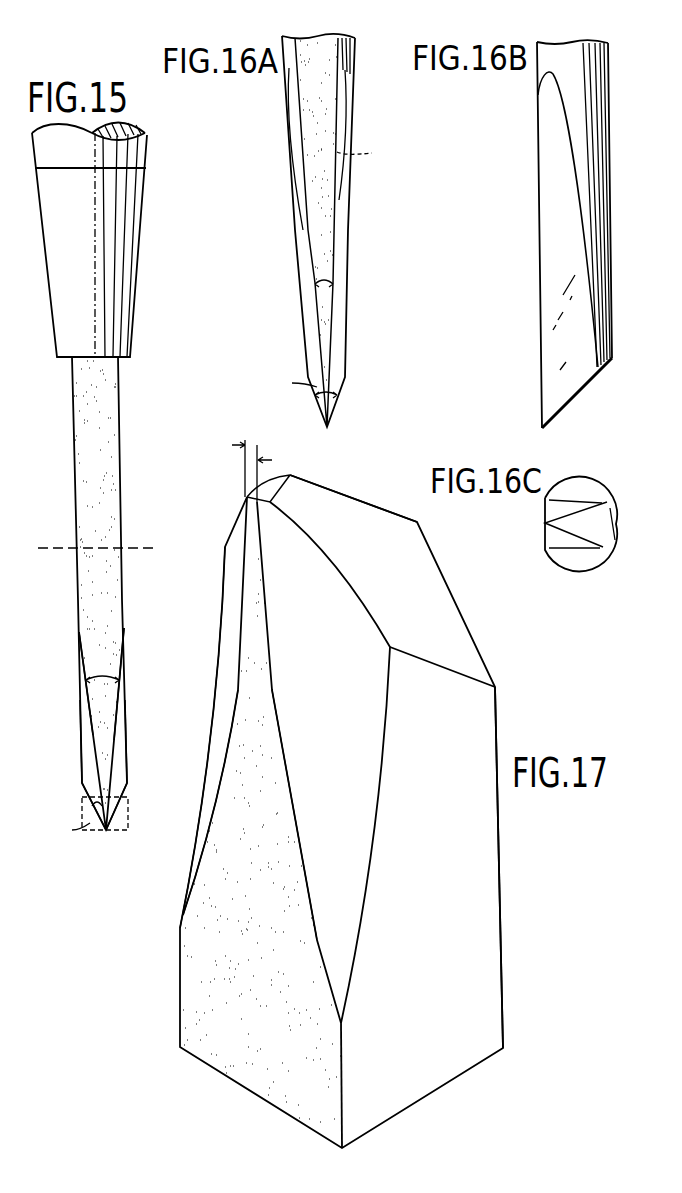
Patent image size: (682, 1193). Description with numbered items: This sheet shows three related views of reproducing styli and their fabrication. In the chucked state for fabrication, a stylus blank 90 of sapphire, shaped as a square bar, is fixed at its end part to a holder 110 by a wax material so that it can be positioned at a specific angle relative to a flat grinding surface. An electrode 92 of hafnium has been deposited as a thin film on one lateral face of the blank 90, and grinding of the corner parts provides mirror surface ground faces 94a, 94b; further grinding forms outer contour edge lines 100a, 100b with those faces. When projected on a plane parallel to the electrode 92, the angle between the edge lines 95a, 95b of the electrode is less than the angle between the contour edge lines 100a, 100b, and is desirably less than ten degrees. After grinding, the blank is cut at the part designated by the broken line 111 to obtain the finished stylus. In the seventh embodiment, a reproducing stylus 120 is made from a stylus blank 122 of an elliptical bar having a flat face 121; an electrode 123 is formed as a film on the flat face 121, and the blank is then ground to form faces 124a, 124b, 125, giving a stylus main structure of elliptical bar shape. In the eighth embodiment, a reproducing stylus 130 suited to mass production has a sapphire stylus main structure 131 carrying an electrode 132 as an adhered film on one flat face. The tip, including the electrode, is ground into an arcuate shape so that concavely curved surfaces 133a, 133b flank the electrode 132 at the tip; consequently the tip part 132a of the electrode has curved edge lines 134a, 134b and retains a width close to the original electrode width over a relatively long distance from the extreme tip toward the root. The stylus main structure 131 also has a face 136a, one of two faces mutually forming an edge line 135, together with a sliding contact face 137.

In FIG. 15, the holder 110 is at (143, 193).
In FIG. 15, the stylus blank 90 is at (122, 397).
In FIG. 15, the broken line 111 is at (100, 545).
In FIG. 15, the electrode 92 is at (110, 581).
In FIG. 15, the edge line of electrode 95a is at (88, 707).
In FIG. 15, the edge line of electrode 95b is at (117, 713).
In FIG. 15, the mirror surface ground face 94a is at (82, 748).
In FIG. 15, the mirror surface ground face 94b is at (123, 747).
In FIG. 15, the external contour edge line 100a is at (82, 802).
In FIG. 15, the external contour edge line 100b is at (125, 800).
In FIG. 16A, the reproducing stylus 120 is at (383, 39).
In FIG. 16B, the reproducing stylus 120 is at (645, 36).
In FIG. 16C, the reproducing stylus 120 is at (631, 483).
In FIG. 16A, the stylus blank 122 is at (353, 92).
In FIG. 16B, the stylus blank 122 is at (607, 125).
In FIG. 16A, the flat face 121 is at (363, 139).
In FIG. 16A, the electrode 123 is at (320, 247).
In FIG. 16B, the electrode 123 is at (537, 193).
In FIG. 16C, the electrode 123 is at (543, 537).
In FIG. 16A, the ground face 124a is at (293, 225).
In FIG. 16C, the ground face 124a is at (572, 557).
In FIG. 16A, the ground face 124b is at (345, 213).
In FIG. 16B, the ground face 124b is at (550, 260).
In FIG. 16C, the ground face 124b is at (568, 495).
In FIG. 16B, the ground face 125 is at (577, 393).
In FIG. 16C, the ground face 125 is at (603, 525).
In FIG. 17, the reproducing stylus 130 is at (388, 493).
In FIG. 17, the edge line 135 is at (337, 477).
In FIG. 17, the sliding contact face 137 is at (265, 488).
In FIG. 17, the tip part of electrode 132a is at (260, 600).
In FIG. 17, the electrode 132 is at (185, 962).
In FIG. 17, the concavely curved surface 133a is at (373, 713).
In FIG. 17, the concavely curved surface 133b is at (227, 660).
In FIG. 17, the curved edge line 134a is at (272, 693).
In FIG. 17, the curved edge line 134b is at (232, 730).
In FIG. 17, the face 136a is at (462, 635).
In FIG. 17, the stylus main structure 131 is at (495, 860).